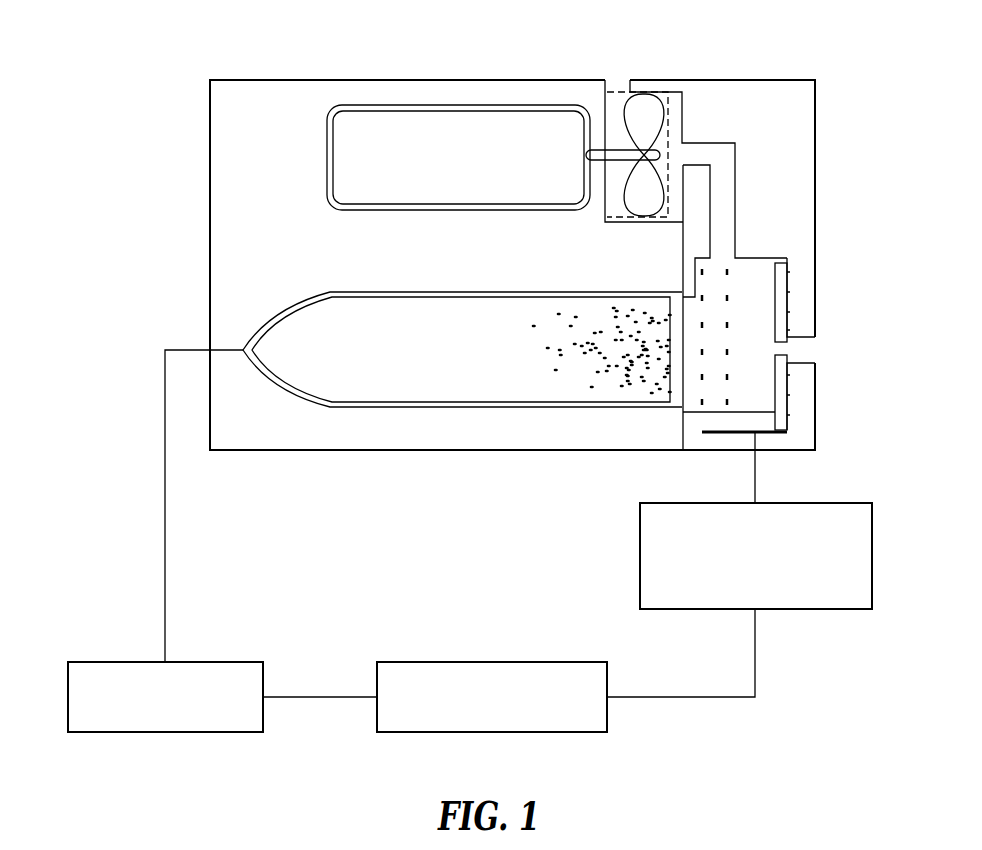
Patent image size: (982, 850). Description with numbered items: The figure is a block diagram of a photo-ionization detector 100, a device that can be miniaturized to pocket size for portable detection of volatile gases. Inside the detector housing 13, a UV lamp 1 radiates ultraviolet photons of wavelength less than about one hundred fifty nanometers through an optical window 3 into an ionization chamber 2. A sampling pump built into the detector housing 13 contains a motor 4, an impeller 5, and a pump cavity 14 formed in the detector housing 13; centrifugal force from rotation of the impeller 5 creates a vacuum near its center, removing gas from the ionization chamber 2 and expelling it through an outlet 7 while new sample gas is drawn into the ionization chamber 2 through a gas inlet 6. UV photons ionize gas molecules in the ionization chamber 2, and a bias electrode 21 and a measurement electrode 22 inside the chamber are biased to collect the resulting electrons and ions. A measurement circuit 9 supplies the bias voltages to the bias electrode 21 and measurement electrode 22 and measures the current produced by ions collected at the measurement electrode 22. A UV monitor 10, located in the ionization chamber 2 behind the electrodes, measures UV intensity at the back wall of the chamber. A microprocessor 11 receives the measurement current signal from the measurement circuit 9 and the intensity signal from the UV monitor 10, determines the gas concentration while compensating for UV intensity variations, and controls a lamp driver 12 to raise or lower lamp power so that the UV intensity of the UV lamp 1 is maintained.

The photo-ionization detector 100 is at (158, 110).
The detector housing 13 is at (282, 84).
The outlet 7 is at (615, 80).
The impeller 5 is at (645, 108).
The pump cavity 14 is at (677, 117).
The motor 4 is at (340, 166).
The measurement electrode 22 is at (730, 270).
The bias electrode 21 is at (700, 272).
The UV monitor 10 is at (788, 272).
The ionization chamber 2 is at (750, 337).
The gas inlet 6 is at (812, 352).
The UV lamp 1 is at (297, 325).
The optical window 3 is at (672, 375).
The measurement circuit 9 is at (857, 612).
The microprocessor 11 is at (578, 660).
The lamp driver 12 is at (234, 660).